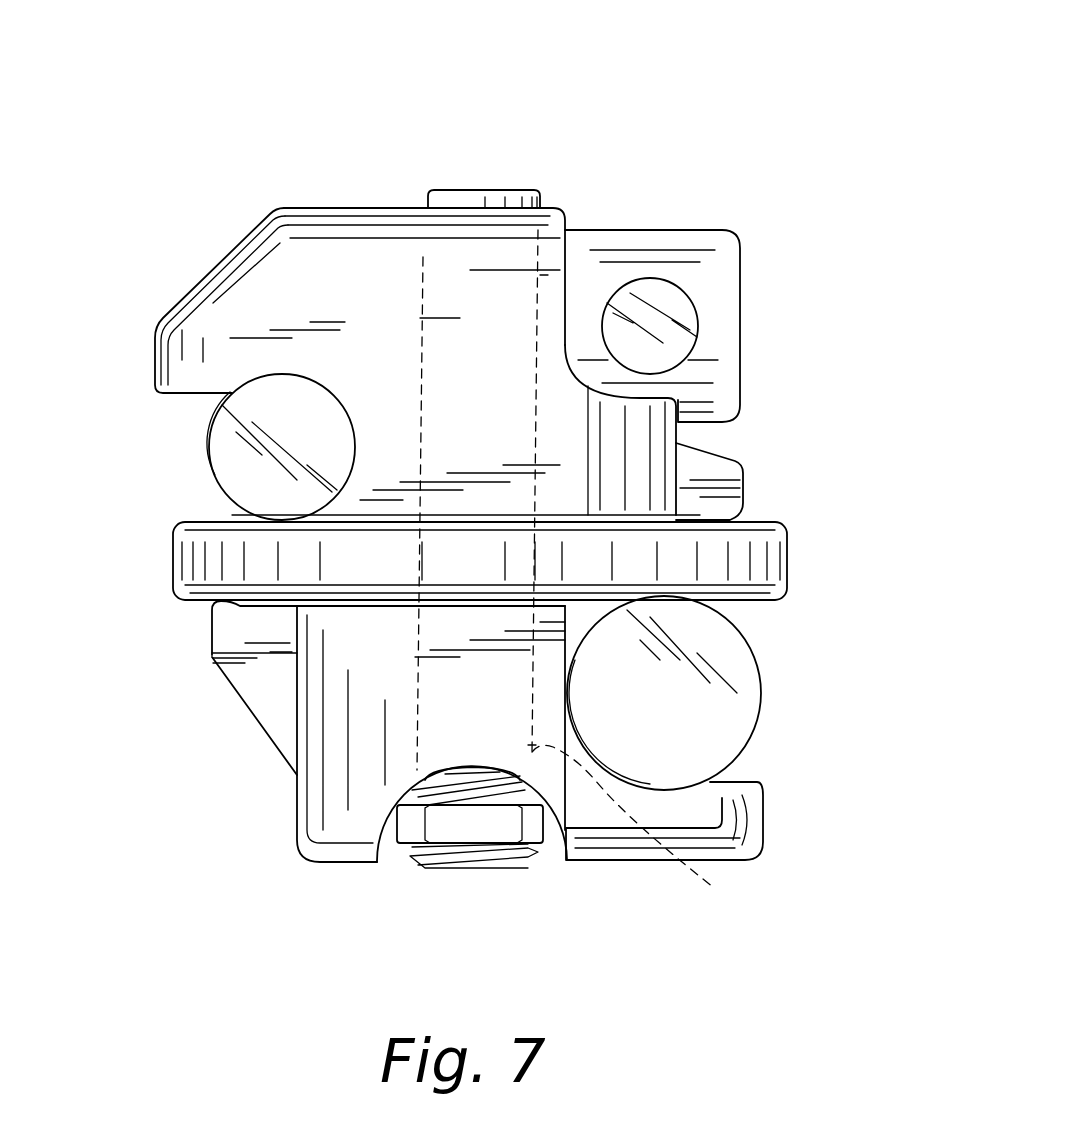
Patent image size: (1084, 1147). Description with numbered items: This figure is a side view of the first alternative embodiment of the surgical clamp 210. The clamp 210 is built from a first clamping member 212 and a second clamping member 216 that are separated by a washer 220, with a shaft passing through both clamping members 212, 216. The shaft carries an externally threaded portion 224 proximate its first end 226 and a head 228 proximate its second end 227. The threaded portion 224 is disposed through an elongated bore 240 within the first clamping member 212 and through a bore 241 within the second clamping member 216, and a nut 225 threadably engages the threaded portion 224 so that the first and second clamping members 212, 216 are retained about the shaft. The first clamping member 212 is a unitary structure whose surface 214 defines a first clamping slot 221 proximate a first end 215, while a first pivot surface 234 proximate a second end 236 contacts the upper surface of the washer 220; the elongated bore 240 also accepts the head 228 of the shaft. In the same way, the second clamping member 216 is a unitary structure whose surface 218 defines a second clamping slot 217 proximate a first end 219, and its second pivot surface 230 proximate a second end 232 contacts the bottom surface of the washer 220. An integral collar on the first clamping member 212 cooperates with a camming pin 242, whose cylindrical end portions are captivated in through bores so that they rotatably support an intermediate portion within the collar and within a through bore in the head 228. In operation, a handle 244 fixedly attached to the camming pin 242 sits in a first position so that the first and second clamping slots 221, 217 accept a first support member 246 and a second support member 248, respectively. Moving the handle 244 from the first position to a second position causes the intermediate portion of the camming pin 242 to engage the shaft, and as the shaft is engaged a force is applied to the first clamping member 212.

The surgical clamp 210 is at (740, 193).
The first clamping member 212 is at (293, 270).
The surface 214 is at (354, 453).
The first end 215 is at (150, 345).
The second clamping member 216 is at (328, 752).
The second clamping slot 217 is at (742, 613).
The surface 218 is at (568, 620).
The first end 219 is at (765, 810).
The washer 220 is at (785, 576).
The first clamping slot 221 is at (226, 498).
The externally threaded portion 224 is at (463, 862).
The nut 225 is at (540, 843).
The first end 226 is at (428, 867).
The second end 227 is at (457, 190).
The head 228 is at (438, 198).
The second pivot surface 230 is at (212, 608).
The second end 232 is at (212, 648).
The first pivot surface 234 is at (738, 518).
The second end 236 is at (708, 462).
The elongated bore 240 is at (563, 268).
The bore 241 is at (713, 887).
The camming pin 242 is at (712, 275).
The handle 244 is at (650, 296).
The first support member 246 is at (223, 448).
The second support member 248 is at (643, 717).